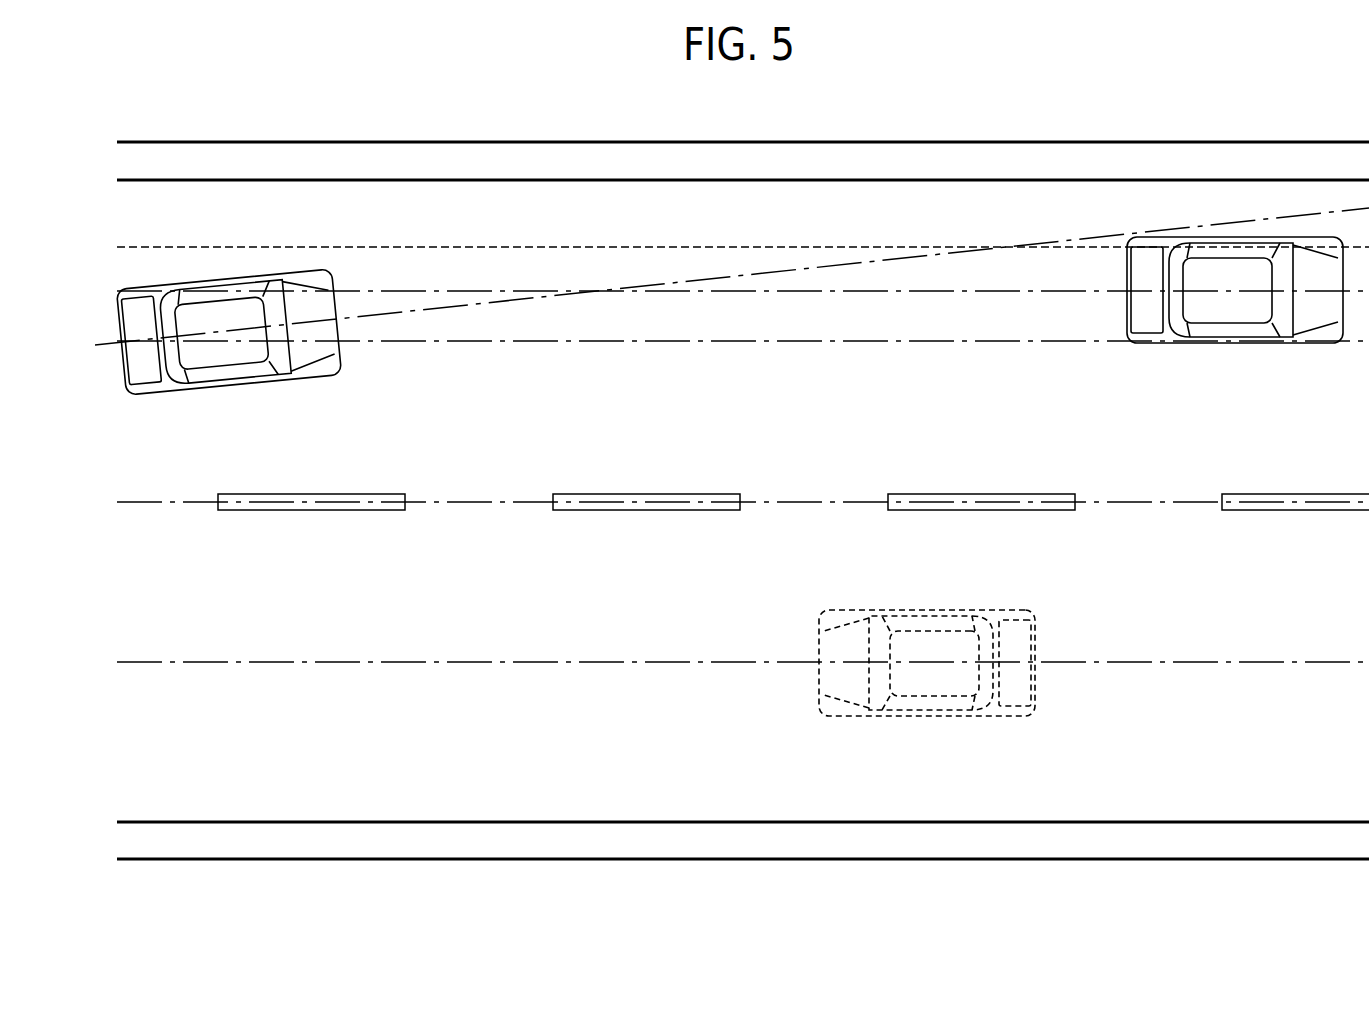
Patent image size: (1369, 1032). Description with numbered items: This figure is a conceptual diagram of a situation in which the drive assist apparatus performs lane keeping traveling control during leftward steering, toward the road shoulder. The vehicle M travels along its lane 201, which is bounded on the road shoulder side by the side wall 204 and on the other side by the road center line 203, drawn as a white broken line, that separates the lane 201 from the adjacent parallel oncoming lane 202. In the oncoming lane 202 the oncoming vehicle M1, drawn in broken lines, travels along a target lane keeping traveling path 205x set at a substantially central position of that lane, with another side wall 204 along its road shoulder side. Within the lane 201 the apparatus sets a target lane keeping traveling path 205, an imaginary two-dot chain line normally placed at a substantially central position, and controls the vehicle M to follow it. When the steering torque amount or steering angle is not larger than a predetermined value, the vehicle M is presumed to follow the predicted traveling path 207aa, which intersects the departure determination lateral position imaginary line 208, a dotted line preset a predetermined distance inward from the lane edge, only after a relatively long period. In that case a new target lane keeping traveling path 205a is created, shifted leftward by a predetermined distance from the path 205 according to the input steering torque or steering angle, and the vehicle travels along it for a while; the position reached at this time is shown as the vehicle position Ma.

The lane 201 is at (143, 212).
The oncoming lane 202 is at (149, 790).
The road center line 203 is at (239, 505).
The side wall 204 is at (175, 158).
The target lane keeping traveling path 205 is at (640, 340).
The new target lane keeping traveling path 205a is at (707, 280).
The target lane keeping traveling path 205x is at (405, 663).
The predicted traveling path 207aa is at (902, 260).
The departure determination lateral position imaginary line 208 is at (815, 243).
The vehicle M is at (237, 280).
The position of the vehicle Ma is at (1218, 272).
The oncoming vehicle M1 is at (923, 687).